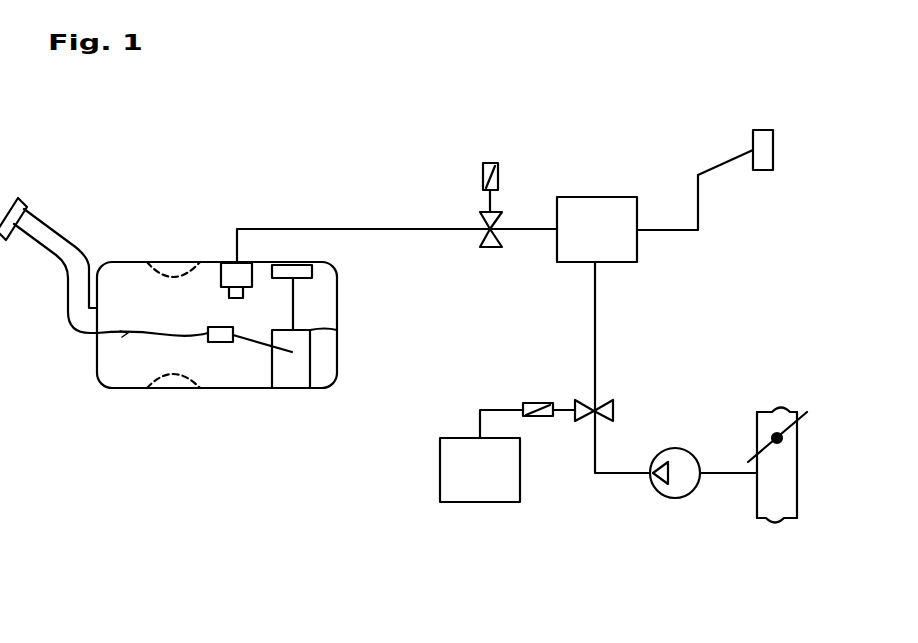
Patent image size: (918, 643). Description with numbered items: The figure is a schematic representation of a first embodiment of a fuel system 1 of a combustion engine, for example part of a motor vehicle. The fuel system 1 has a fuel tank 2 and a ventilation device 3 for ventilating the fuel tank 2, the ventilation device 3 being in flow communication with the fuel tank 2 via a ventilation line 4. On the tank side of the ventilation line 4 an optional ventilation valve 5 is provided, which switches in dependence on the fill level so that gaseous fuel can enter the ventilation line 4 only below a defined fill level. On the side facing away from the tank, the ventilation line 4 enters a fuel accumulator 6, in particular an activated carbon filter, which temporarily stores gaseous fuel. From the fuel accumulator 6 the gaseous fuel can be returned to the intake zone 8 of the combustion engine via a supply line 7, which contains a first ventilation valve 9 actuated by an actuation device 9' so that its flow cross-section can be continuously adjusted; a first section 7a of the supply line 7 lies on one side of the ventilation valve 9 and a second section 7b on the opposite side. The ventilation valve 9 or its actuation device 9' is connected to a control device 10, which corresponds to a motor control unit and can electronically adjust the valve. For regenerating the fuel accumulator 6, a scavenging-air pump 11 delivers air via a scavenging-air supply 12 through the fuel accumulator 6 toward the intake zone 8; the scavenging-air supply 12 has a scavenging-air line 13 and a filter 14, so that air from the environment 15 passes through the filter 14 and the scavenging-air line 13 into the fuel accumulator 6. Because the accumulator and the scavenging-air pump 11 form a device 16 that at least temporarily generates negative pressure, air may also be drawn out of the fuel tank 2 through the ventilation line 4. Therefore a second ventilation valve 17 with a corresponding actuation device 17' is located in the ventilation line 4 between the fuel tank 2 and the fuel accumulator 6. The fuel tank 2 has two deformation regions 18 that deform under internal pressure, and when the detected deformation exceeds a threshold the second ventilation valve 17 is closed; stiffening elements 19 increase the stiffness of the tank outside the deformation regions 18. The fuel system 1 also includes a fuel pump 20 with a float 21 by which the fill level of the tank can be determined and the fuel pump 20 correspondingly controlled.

The fuel system 1 is at (362, 163).
The fuel tank 2 is at (122, 270).
The ventilation device 3 is at (242, 205).
The ventilation line 4 is at (298, 228).
The ventilation valve 5 is at (240, 274).
The fuel accumulator 6 is at (598, 197).
The supply line 7 is at (631, 367).
The first section of the supply line 7a is at (598, 296).
The second section of the supply line 7b is at (598, 440).
The intake zone 8 is at (757, 432).
The first ventilation valve 9 is at (621, 412).
The actuation device 9' is at (549, 377).
The control device 10 is at (482, 515).
The scavenging-air pump 11 is at (672, 498).
The scavenging-air supply 12 is at (707, 181).
The scavenging-air line 13 is at (727, 160).
The filter 14 is at (766, 130).
The environment 15 is at (802, 217).
The device generating negative pressure 16 is at (645, 161).
The second ventilation valve 17 is at (457, 210).
The actuation device 17' is at (497, 155).
The deformation region 18 is at (176, 262).
The stiffening elements 19 is at (150, 262).
The fuel pump 20 is at (290, 378).
The float 21 is at (222, 342).